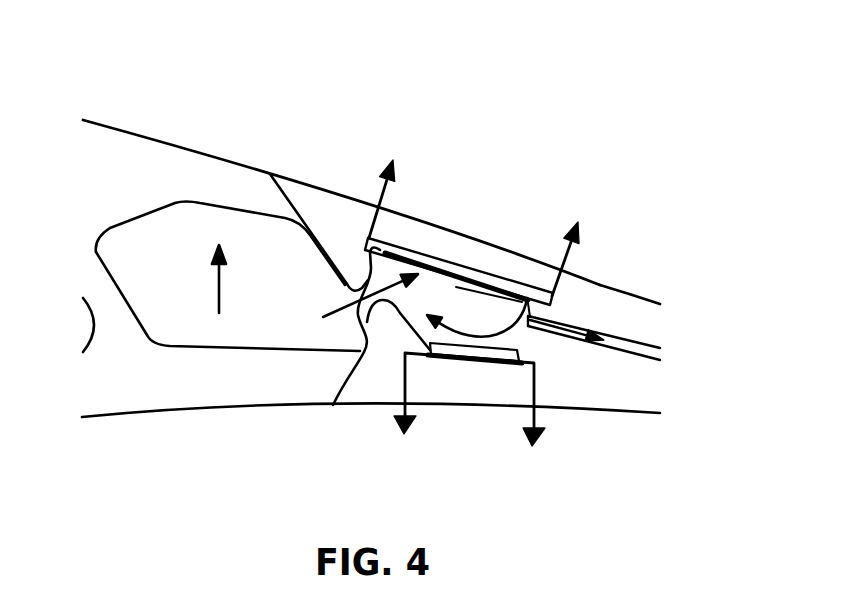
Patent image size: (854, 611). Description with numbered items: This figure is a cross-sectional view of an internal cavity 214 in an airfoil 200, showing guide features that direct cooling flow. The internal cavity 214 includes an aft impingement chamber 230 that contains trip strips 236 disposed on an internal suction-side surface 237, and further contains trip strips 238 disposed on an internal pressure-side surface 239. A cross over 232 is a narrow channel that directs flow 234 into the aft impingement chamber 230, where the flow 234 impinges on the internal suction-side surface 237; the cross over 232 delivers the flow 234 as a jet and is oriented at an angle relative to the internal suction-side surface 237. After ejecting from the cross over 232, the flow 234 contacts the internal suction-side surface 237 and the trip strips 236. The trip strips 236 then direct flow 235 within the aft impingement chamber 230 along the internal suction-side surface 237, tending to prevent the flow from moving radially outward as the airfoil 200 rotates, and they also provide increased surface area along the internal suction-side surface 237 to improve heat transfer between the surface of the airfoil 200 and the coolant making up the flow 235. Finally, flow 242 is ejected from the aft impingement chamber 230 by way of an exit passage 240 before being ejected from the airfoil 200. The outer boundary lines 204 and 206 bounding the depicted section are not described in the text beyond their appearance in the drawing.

The airfoil 200 is at (115, 127).
The outer skin 204 is at (640, 293).
The inner wall 206 is at (273, 410).
The internal cavity 214 is at (138, 235).
The aft impingement chamber 230 is at (368, 238).
The cross over 232 is at (270, 174).
The flow 234 is at (333, 405).
The flow 235 is at (527, 298).
The trip strips 236 is at (456, 287).
The internal suction-side surface 237 is at (410, 252).
The trip strips 238 is at (467, 355).
The internal pressure-side surface 239 is at (447, 357).
The exit passage 240 is at (568, 327).
The flow 242 is at (582, 346).